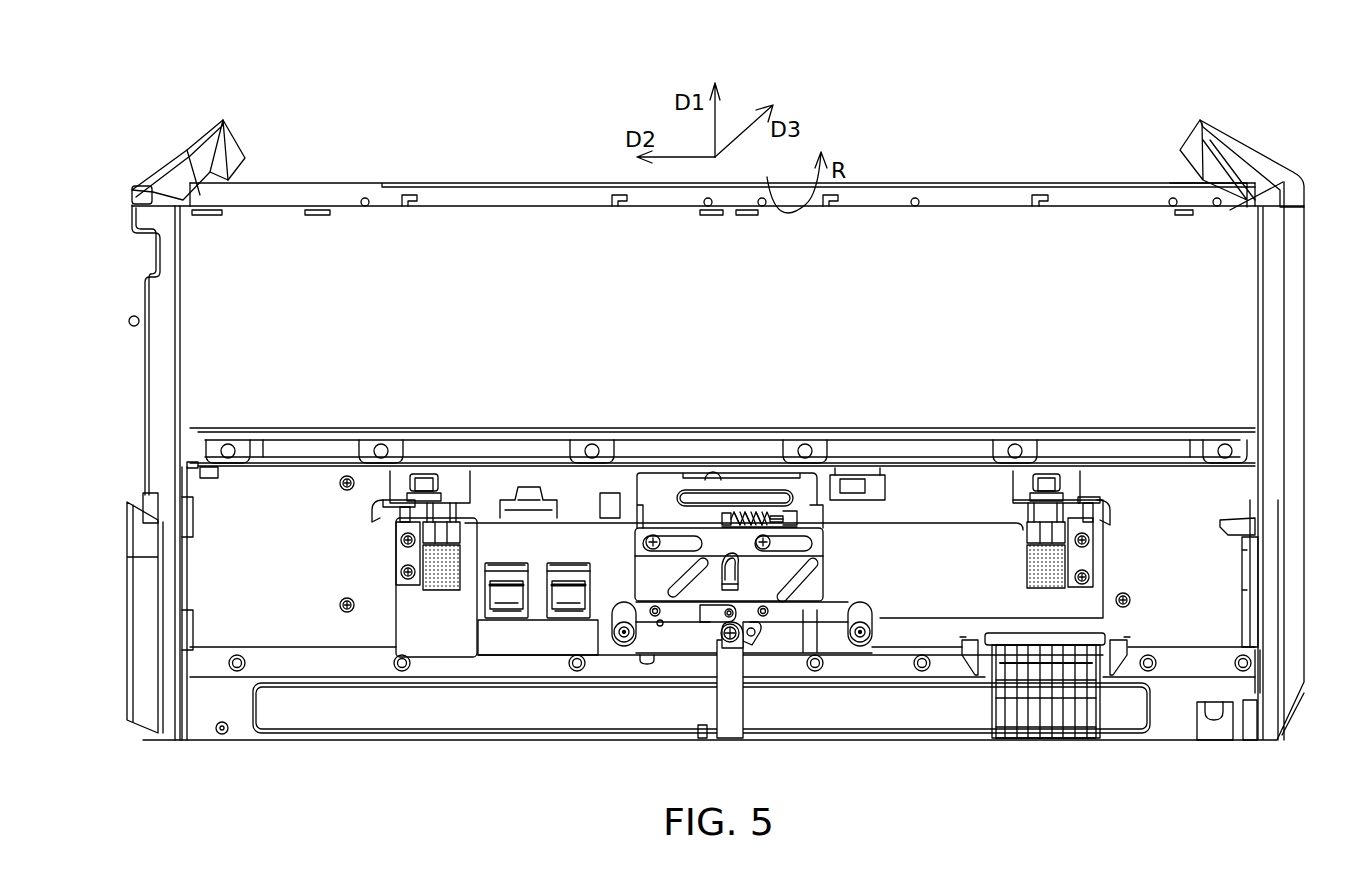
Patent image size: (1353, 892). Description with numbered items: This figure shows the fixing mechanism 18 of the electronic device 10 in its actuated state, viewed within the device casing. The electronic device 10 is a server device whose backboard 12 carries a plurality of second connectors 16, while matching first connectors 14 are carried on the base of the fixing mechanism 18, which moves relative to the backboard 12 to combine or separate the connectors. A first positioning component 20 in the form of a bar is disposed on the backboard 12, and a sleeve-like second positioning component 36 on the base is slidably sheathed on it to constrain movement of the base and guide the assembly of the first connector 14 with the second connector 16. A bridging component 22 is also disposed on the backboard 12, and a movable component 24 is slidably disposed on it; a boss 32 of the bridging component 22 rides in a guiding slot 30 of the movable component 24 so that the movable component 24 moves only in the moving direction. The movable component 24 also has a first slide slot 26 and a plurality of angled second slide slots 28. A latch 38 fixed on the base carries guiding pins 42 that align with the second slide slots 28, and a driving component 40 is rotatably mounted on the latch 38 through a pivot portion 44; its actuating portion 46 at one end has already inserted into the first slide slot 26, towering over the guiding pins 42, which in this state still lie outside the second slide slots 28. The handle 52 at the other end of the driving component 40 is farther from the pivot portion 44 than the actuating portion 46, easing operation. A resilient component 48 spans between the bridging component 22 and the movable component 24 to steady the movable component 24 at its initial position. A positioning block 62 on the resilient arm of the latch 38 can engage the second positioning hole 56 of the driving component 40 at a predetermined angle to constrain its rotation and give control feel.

The electronic device 10 is at (1103, 143).
The backboard 12 is at (302, 470).
The first connector 14 is at (440, 580).
The second connector 16 is at (455, 486).
The fixing mechanism 18 is at (622, 670).
The first positioning component 20 is at (405, 511).
The bridging component 22 is at (657, 515).
The movable component 24 is at (715, 540).
The first slide slot 26 is at (717, 558).
The second slide slot 28 is at (685, 580).
The guiding slot 30 is at (690, 540).
The boss 32 is at (645, 543).
The second positioning component 36 is at (408, 556).
The latch 38 is at (833, 635).
The driving component 40 is at (730, 715).
The guiding pin 42 is at (762, 618).
The pivot portion 44 is at (735, 646).
The actuating portion 46 is at (732, 574).
The resilient component 48 is at (768, 510).
The handle 52 is at (702, 738).
The second positioning hole 56 is at (755, 640).
The positioning block 62 is at (710, 625).